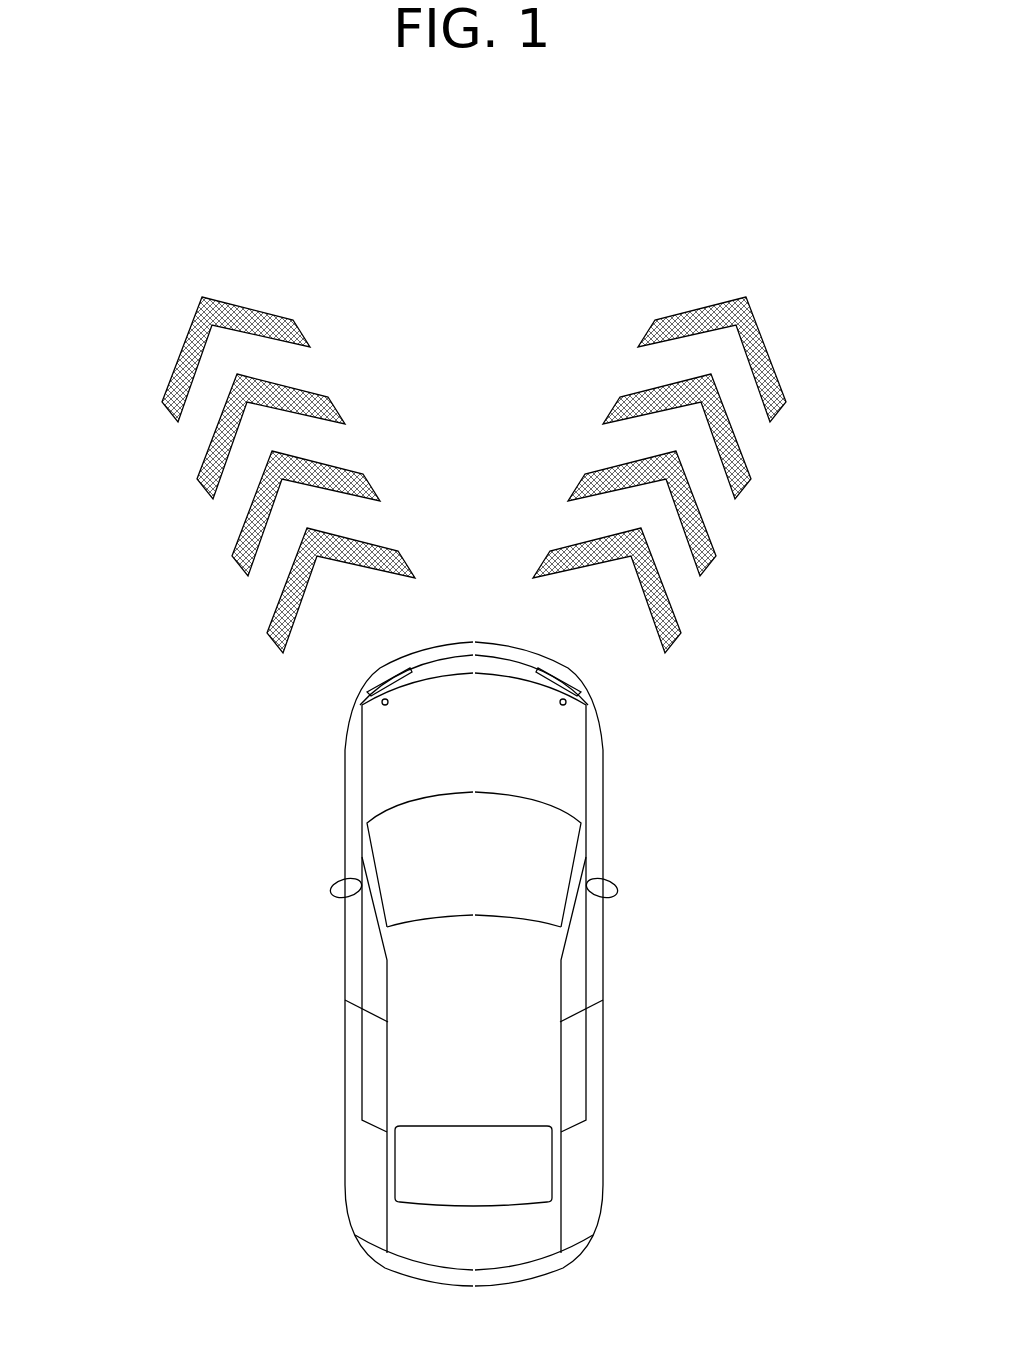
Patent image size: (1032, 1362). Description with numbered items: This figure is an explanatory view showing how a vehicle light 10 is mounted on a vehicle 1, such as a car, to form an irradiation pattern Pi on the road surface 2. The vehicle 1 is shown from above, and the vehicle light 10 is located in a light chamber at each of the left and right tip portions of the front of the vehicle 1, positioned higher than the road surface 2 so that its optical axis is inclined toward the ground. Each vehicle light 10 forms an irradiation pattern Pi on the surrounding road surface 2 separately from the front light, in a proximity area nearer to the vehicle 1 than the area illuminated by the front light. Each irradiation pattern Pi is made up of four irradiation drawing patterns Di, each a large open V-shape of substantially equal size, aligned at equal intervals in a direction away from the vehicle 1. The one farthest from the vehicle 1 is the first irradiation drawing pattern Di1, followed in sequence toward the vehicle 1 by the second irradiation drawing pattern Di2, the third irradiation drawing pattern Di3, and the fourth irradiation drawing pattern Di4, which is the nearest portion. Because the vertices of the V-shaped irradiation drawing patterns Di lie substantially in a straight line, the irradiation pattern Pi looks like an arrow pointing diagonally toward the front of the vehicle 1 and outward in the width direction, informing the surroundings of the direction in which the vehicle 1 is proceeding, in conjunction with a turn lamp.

The vehicle 1 is at (623, 965).
The vehicle light 10 is at (383, 710).
The road surface 2 is at (487, 360).
The irradiation pattern Pi is at (336, 333).
The irradiation drawing pattern Di is at (474, 508).
The first irradiation drawing pattern Di1 is at (153, 407).
The second irradiation drawing pattern Di2 is at (187, 485).
The third irradiation drawing pattern Di3 is at (230, 565).
The fourth irradiation drawing pattern Di4 is at (267, 643).